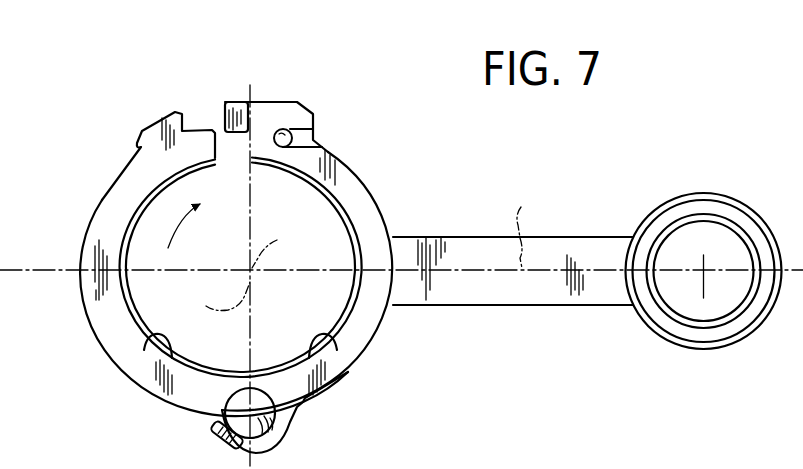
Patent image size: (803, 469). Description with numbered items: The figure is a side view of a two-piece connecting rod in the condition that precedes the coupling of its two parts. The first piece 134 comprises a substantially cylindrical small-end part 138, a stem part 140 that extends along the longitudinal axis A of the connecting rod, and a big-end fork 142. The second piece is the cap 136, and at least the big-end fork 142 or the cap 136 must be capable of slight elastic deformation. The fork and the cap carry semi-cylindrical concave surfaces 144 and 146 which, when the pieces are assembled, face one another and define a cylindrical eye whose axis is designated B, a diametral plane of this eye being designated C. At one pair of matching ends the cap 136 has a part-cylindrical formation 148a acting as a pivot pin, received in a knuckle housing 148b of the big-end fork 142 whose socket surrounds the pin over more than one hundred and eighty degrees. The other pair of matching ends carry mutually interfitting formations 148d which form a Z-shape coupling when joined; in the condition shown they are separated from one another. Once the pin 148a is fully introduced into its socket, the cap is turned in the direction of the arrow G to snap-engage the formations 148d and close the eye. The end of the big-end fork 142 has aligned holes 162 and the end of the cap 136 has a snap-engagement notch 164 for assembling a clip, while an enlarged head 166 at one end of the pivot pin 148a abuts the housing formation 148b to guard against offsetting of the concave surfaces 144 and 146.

The piece 134 is at (465, 230).
The cap 136 is at (96, 193).
The small-end part 138 is at (690, 190).
The stem part 140 is at (516, 292).
The big-end fork 142 is at (372, 180).
The concave surface 144 is at (345, 377).
The concave surface 146 is at (145, 348).
The part-cylindrical formation 148a is at (118, 4).
The knuckle housing 148b is at (279, 436).
The interfitting formations 148d is at (222, 97).
The aligned holes 162 is at (298, 142).
The snap-engagement notch 164 is at (146, 148).
The enlarged head 166 is at (213, 437).
The axis A is at (526, 225).
The axis B is at (274, 242).
The diametral plane C is at (218, 299).
The arrow G is at (176, 226).